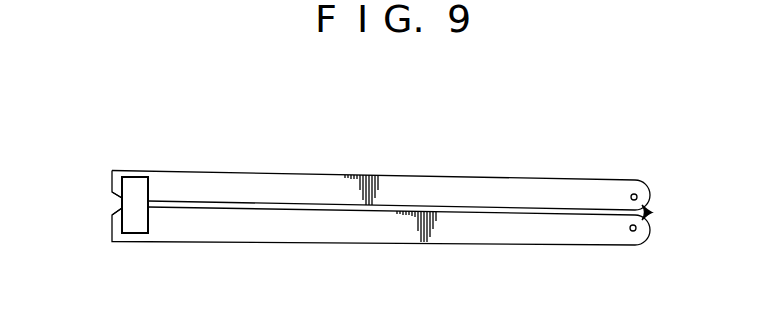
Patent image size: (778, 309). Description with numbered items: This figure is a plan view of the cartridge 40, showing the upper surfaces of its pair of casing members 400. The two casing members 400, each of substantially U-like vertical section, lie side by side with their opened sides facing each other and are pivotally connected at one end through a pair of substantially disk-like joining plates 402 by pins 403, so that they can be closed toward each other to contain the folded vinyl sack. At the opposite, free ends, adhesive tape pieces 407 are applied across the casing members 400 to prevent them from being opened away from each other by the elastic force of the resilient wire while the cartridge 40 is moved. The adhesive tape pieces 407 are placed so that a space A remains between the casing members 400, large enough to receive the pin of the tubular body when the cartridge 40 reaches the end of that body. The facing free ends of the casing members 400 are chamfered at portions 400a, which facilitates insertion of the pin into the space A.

The cartridge 40 is at (367, 171).
The casing member 400 is at (238, 187).
The chamfered portion 400a is at (113, 198).
The joining plate 402 is at (652, 213).
The pin 403 is at (638, 188).
The adhesive tape piece 407 is at (136, 185).
The space A is at (115, 205).